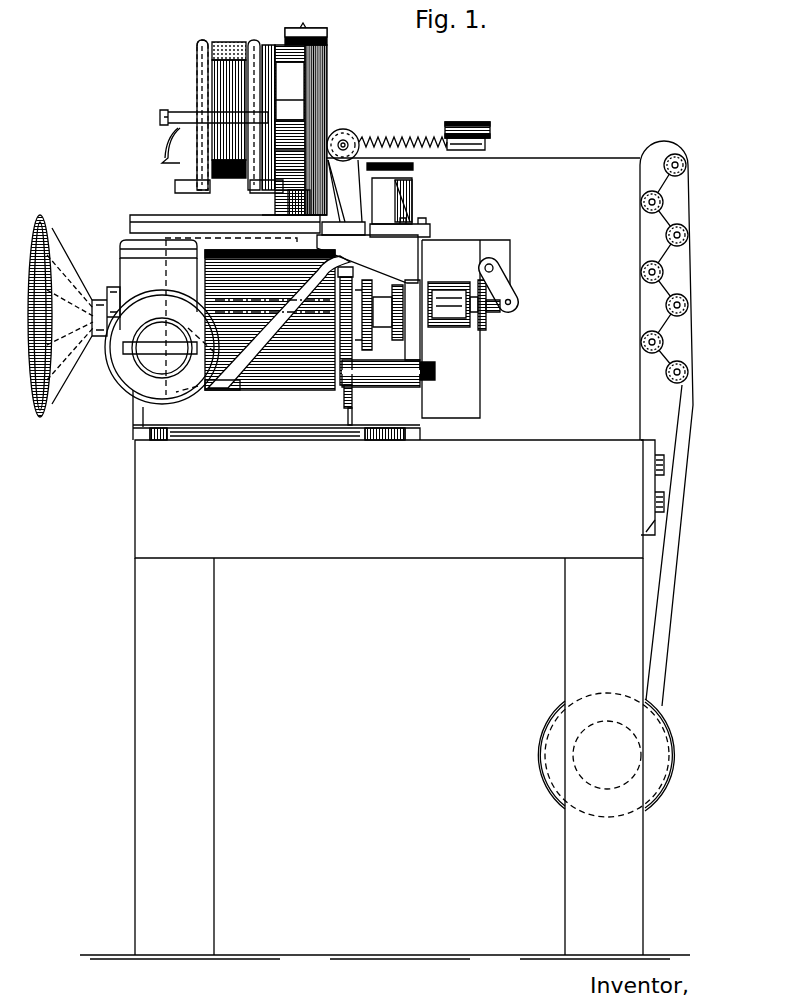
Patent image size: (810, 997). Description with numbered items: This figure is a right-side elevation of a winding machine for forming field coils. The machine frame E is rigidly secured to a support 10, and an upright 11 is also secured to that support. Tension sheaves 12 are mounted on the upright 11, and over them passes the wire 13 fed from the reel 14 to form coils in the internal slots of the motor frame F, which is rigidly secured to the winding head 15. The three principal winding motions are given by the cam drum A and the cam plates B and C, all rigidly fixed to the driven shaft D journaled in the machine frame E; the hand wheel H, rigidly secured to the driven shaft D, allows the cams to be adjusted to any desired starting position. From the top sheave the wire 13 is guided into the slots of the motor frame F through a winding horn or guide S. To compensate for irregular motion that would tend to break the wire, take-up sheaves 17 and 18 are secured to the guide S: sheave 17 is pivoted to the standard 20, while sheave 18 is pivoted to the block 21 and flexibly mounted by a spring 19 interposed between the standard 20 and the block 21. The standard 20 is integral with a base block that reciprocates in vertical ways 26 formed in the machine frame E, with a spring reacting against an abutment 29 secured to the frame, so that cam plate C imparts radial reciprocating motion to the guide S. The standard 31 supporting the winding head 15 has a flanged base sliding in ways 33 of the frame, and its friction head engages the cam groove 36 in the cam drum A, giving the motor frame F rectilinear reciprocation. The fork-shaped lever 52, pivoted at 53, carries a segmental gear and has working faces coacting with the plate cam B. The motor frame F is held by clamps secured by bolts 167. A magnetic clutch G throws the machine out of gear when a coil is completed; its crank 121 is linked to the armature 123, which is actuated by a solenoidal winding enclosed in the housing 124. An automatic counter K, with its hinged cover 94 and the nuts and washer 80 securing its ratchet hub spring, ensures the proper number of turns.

The support 10 is at (389, 572).
The upright 11 is at (640, 394).
The tension sheaves 12 is at (689, 190).
The wire 13 is at (563, 162).
The reel 14 is at (668, 755).
The winding head 15 is at (327, 78).
The take-up sheave 17 is at (347, 130).
The take-up sheave 18 is at (462, 122).
The spring 19 is at (404, 138).
The standard 20 is at (343, 197).
The block 21 is at (488, 142).
The vertical ways 26 is at (385, 194).
The abutment 29 is at (414, 167).
The standard 31 is at (288, 206).
The ways 33 is at (178, 220).
The cam groove 36 is at (232, 390).
The fork-shaped lever 52 is at (350, 425).
The pivot 53 is at (342, 392).
The nuts and washer 80 is at (172, 338).
The cover 94 is at (158, 282).
The crank 121 is at (510, 280).
The armature 123 is at (483, 332).
The housing 124 is at (447, 282).
The bolts 167 is at (232, 118).
The cam drum A is at (288, 390).
The cam plate B is at (358, 378).
The cam plate C is at (420, 341).
The driven shaft D is at (383, 278).
The machine frame E is at (418, 430).
The motor frame F is at (228, 42).
The magnetic clutch G is at (497, 318).
The hand wheel H is at (60, 372).
The automatic counter K is at (120, 270).
The winding horn S is at (172, 152).